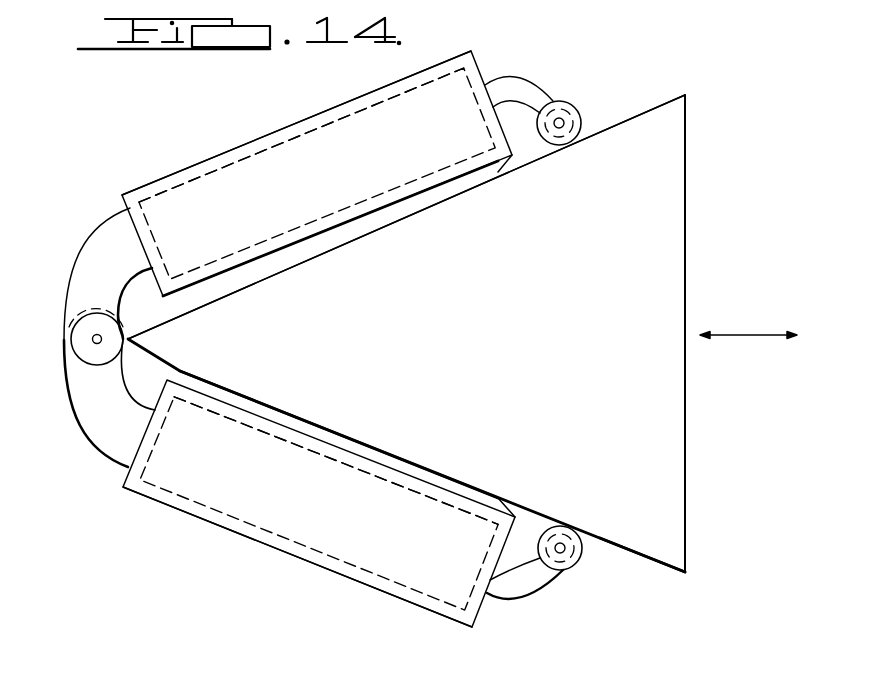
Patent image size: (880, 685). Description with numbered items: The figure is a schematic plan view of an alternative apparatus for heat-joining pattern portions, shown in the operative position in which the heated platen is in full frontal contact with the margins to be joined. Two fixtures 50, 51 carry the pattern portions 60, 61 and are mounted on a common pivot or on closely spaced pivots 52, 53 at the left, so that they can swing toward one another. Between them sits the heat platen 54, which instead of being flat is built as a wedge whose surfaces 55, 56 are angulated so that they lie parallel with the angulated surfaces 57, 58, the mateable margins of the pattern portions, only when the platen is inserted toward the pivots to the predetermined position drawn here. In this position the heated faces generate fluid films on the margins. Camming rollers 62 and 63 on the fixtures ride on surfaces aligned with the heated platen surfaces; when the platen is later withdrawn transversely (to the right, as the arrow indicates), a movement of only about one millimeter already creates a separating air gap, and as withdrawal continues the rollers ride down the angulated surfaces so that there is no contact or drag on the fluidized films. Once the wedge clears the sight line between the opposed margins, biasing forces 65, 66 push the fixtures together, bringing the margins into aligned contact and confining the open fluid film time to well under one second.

The fixture 50 is at (177, 174).
The fixture 51 is at (227, 528).
The pivot 52 is at (96, 338).
The pivot 53 is at (96, 340).
The heat platen 54 is at (687, 283).
The angulated surface of heat platen 55 is at (428, 206).
The angulated surface of heat platen 56 is at (660, 573).
The angulated surface (mateable margin) 57 is at (340, 248).
The angulated surface (mateable margin) 58 is at (478, 489).
The pattern portion 60 is at (273, 258).
The pattern portion 61 is at (373, 456).
The camming roller 62 is at (582, 112).
The camming roller 63 is at (572, 571).
The biasing force 65 is at (292, 125).
The biasing force 66 is at (335, 572).